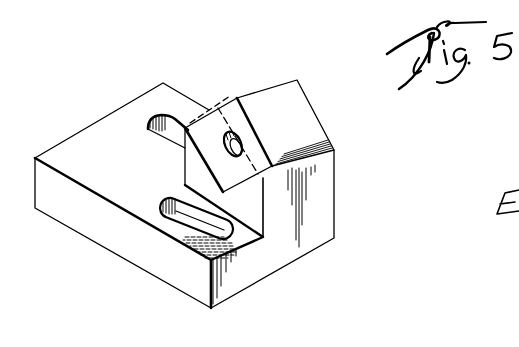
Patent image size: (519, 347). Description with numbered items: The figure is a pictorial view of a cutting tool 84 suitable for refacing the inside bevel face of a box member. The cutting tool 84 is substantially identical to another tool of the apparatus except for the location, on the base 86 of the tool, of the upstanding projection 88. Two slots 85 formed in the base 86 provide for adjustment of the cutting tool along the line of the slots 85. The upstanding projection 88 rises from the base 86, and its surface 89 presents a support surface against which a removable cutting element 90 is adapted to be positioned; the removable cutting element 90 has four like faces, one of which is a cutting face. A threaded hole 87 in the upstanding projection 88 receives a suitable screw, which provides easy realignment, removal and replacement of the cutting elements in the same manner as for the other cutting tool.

The cutting tool 84 is at (288, 70).
The slots 85 is at (168, 116).
The base 86 is at (107, 128).
The threaded hole 87 is at (225, 141).
The upstanding projection 88 is at (322, 169).
The surface 89 is at (231, 162).
The removable cutting element 90 is at (216, 98).